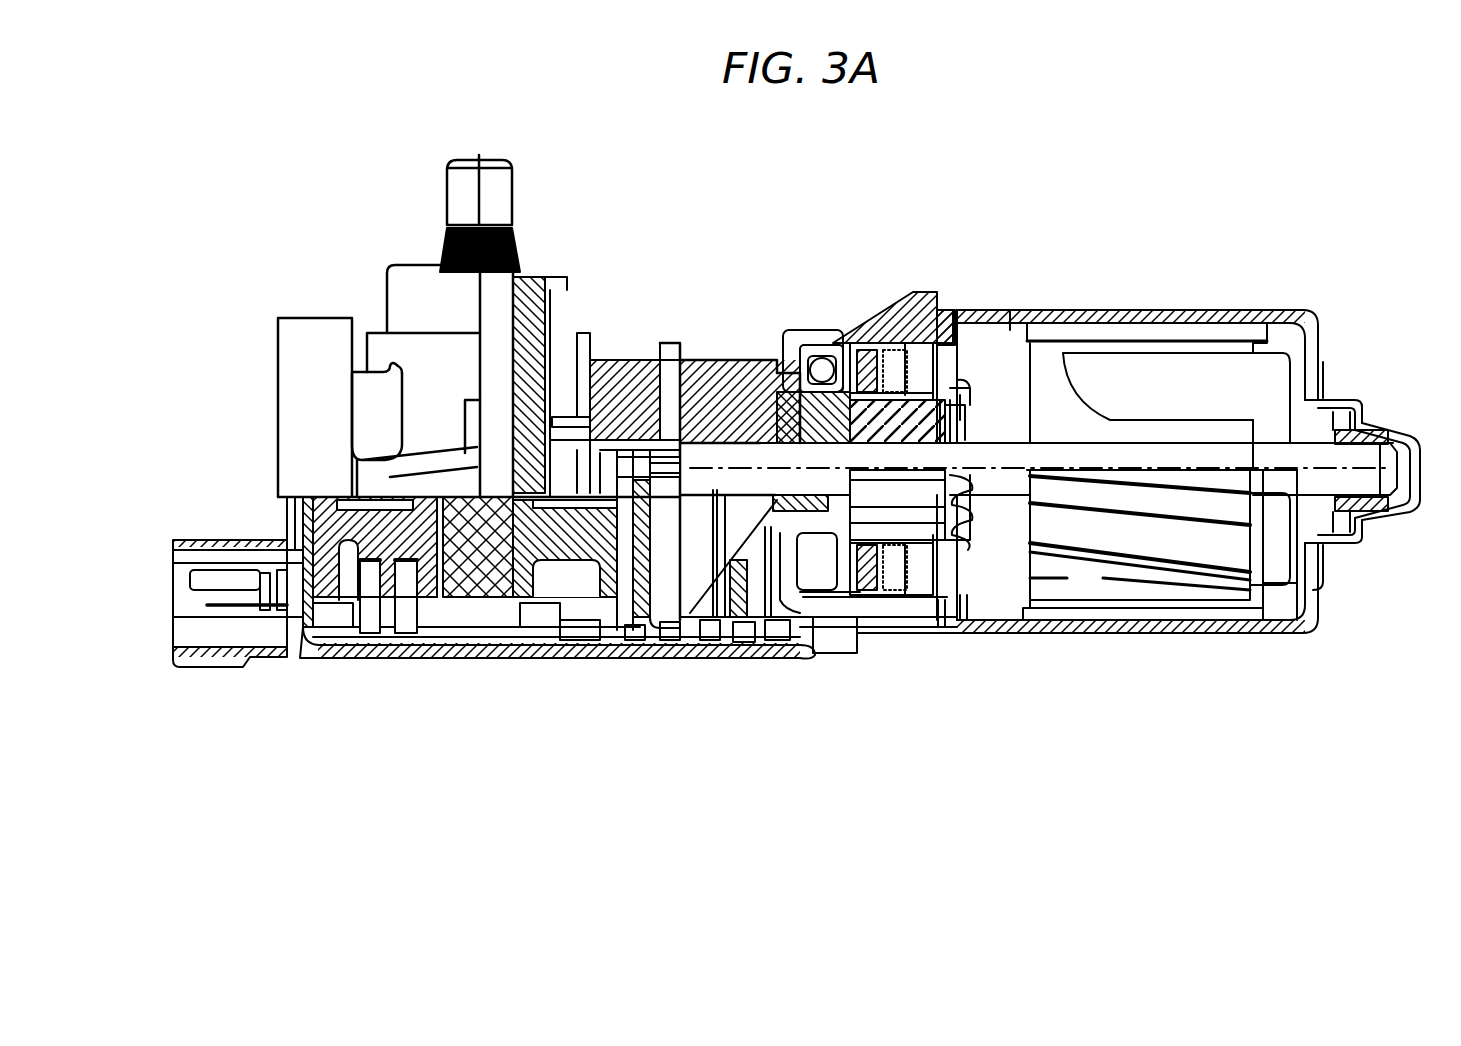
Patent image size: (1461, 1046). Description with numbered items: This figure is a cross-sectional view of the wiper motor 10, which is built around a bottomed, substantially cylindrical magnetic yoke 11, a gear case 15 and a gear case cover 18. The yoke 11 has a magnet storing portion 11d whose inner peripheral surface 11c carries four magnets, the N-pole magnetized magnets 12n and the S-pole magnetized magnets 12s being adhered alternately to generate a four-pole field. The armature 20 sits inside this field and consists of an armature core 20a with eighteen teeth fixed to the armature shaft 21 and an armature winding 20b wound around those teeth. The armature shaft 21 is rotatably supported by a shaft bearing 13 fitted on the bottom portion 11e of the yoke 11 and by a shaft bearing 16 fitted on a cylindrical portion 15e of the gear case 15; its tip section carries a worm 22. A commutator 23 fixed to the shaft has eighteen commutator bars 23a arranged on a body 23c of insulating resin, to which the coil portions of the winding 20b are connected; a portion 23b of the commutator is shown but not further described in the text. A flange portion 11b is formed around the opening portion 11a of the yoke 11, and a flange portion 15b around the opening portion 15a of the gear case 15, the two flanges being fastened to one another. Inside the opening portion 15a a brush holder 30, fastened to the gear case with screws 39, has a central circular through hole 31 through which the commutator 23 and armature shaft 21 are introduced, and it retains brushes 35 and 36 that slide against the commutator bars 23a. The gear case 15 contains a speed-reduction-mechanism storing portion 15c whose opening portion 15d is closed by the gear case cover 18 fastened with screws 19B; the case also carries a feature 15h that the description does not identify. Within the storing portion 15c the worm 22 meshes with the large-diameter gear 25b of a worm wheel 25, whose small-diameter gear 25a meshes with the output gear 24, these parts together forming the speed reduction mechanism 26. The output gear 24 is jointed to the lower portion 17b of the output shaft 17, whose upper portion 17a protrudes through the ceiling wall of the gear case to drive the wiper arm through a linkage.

The wiper motor 10 is at (773, 708).
The magnetic yoke 11 is at (1212, 312).
The opening portion 11a is at (938, 628).
The flange portion 11b is at (967, 620).
The inner peripheral surface 11c is at (1010, 330).
The magnet storing portion 11d is at (1273, 637).
The bottom portion 11e is at (1377, 402).
The S-pole magnetized magnet 12s is at (1160, 327).
The N-pole magnetized magnet 12n is at (1147, 612).
The shaft bearing 13 is at (1393, 428).
The gear case 15 is at (707, 342).
The opening portion 15a is at (950, 342).
The flange portion 15b is at (927, 310).
The speed-reduction-mechanism storing portion 15c is at (493, 660).
The opening portion 15d is at (740, 660).
The cylindrical portion 15e is at (730, 342).
The bracket hole 15h is at (907, 340).
The shaft bearing 16 is at (672, 656).
The output shaft 17 is at (438, 245).
The upper portion 17a is at (513, 185).
The lower portion 17b is at (423, 660).
The gear case cover 18 is at (360, 660).
The screws 19B is at (817, 622).
The armature 20 is at (1296, 362).
The armature core 20a is at (1210, 548).
The armature winding 20b is at (1310, 322).
The armature shaft 21 is at (1320, 490).
The worm 22 is at (550, 445).
The commutator 23 is at (937, 587).
The commutator bar 23a is at (975, 398).
The brush spring 23b is at (1010, 628).
The body 23c is at (937, 340).
The output gear 24 is at (273, 440).
The worm wheel 25 is at (568, 658).
The small-diameter gear 25a is at (593, 660).
The large-diameter gear 25b is at (630, 360).
The speed reduction mechanism 26 is at (567, 447).
The brush holder 30 is at (847, 340).
The through hole 31 is at (790, 380).
The brush 35 is at (890, 340).
The brush 36 is at (860, 653).
The screws 39 is at (873, 340).